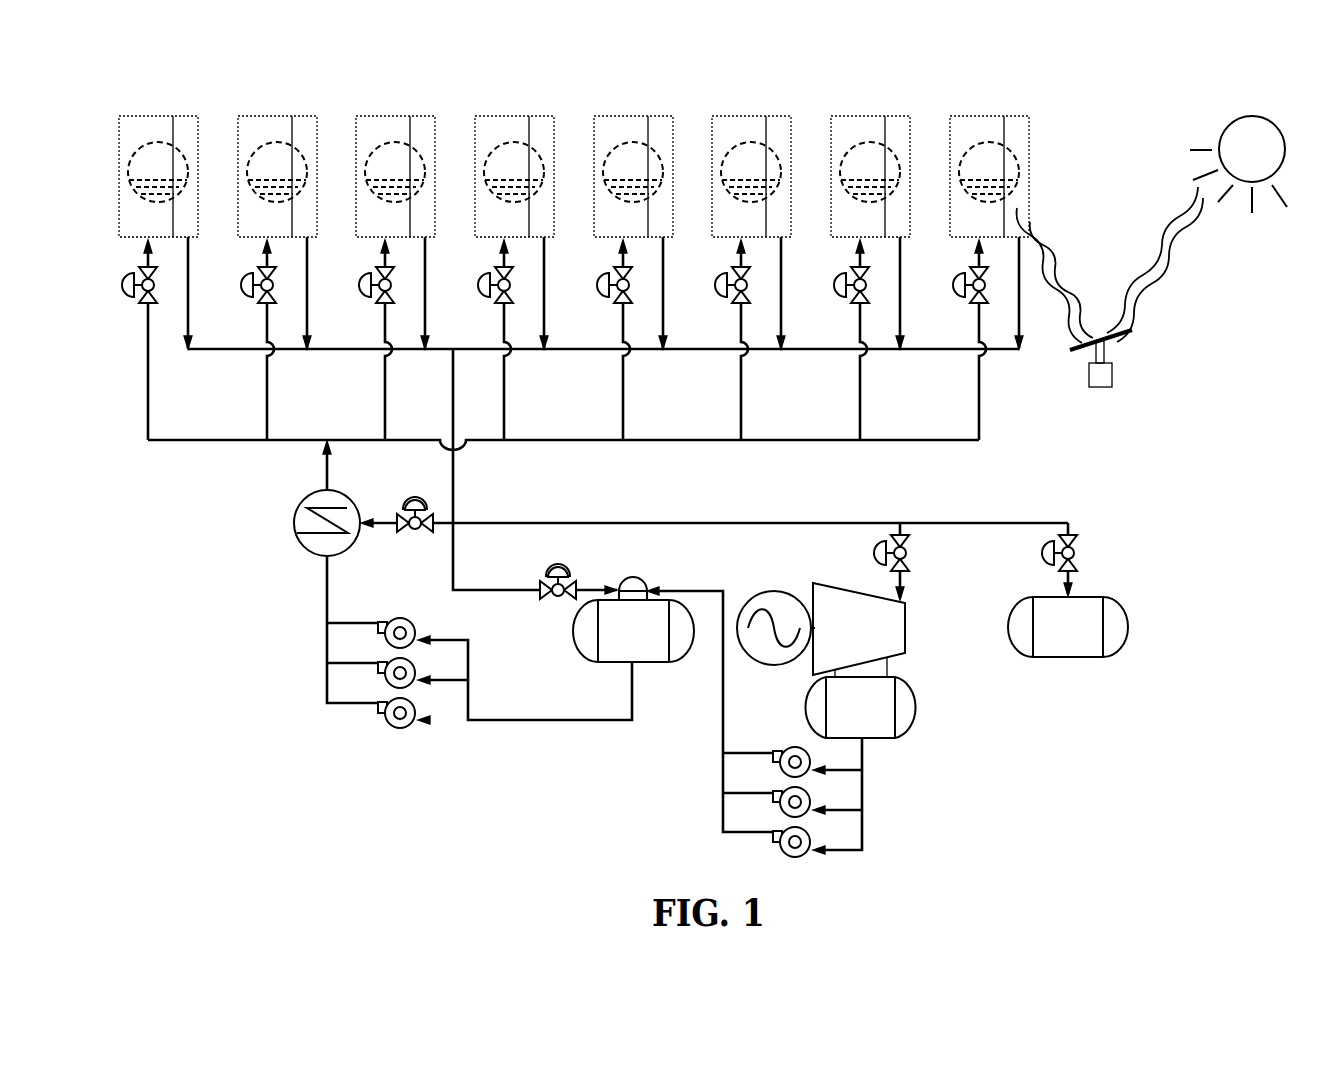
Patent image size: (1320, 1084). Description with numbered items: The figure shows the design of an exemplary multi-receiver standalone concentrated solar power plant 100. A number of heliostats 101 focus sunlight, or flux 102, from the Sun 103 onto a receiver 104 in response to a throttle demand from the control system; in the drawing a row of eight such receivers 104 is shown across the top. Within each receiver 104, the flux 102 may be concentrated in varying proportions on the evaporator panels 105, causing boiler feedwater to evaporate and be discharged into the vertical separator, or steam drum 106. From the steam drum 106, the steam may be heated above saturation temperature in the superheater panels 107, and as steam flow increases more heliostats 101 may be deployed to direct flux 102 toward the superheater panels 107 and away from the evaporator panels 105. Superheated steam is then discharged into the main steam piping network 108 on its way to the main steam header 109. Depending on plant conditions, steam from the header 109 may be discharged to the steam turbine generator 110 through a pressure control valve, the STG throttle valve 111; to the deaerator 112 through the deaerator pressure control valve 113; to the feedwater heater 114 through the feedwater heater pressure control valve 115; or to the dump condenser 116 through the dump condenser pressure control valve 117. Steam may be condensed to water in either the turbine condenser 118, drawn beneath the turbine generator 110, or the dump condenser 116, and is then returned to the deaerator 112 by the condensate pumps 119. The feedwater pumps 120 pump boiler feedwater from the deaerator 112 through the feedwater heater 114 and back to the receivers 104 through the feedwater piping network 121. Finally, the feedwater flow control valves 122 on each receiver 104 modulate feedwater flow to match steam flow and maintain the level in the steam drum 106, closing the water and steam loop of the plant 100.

The concentrated solar power plant 100 is at (1232, 878).
The heliostats 101 is at (1112, 380).
The flux 102 is at (1063, 275).
The Sun 103 is at (1283, 167).
The receiver 104 is at (1015, 116).
The evaporator panels 105 is at (1000, 210).
The steam drum 106 is at (1017, 157).
The superheater panels 107 is at (973, 213).
The main steam piping network 108 is at (997, 352).
The main steam header 109 is at (704, 522).
The steam turbine generator 110 is at (852, 590).
The STG throttle valve 111 is at (912, 550).
The deaerator 112 is at (612, 663).
The deaerator pressure control valve 113 is at (555, 601).
The feedwater heater 114 is at (300, 553).
The feedwater heater pressure control valve 115 is at (415, 537).
The dump condenser 116 is at (1057, 658).
The dump condenser pressure control valve 117 is at (1080, 550).
The turbine condenser 118 is at (912, 727).
The condensate pumps 119 is at (780, 845).
The feedwater pumps 120 is at (383, 720).
The feedwater piping network 121 is at (235, 443).
The feedwater flow control valves 122 is at (965, 286).